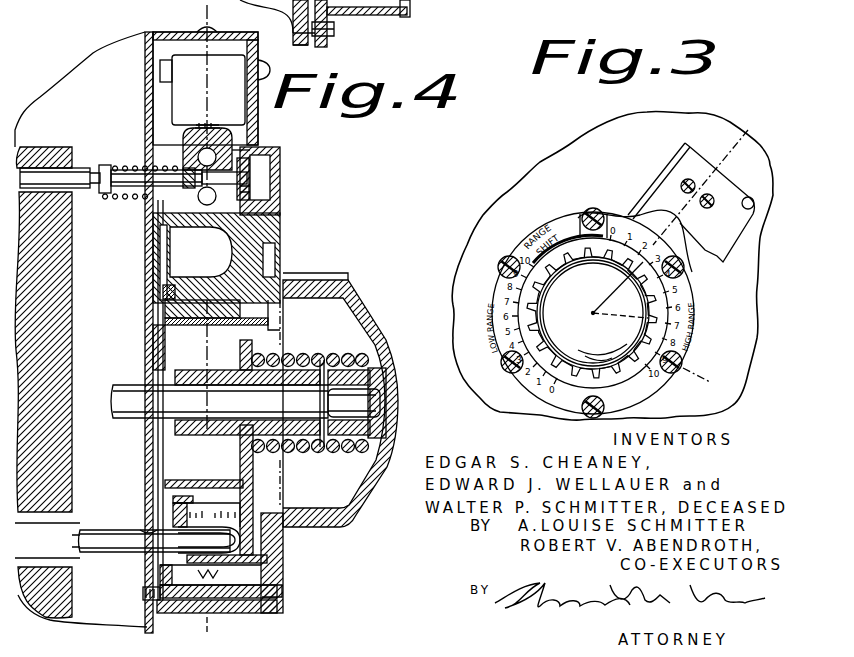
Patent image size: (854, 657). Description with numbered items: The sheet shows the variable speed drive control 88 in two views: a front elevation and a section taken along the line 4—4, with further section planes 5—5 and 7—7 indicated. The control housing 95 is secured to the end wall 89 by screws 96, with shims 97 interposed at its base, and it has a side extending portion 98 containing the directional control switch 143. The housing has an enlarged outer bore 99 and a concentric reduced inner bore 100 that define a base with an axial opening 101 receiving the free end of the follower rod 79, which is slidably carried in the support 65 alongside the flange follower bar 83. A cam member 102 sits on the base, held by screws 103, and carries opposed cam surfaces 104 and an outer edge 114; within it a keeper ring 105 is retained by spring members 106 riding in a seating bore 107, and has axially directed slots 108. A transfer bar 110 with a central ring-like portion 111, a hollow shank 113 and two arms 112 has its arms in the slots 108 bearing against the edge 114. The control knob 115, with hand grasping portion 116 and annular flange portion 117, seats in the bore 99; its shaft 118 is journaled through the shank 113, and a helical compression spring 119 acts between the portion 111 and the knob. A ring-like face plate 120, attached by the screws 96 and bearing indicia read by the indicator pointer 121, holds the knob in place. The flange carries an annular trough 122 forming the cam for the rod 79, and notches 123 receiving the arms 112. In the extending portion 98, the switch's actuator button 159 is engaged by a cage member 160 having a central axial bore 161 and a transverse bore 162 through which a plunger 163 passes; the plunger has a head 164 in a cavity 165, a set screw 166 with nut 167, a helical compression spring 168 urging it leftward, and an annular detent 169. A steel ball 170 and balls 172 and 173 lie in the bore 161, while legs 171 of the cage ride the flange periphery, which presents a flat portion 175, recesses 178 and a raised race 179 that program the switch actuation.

In FIG. 3, the section line 4— 4 is at (708, 128).
In FIG. 4, the section line 5— 5 is at (175, 17).
In FIG. 4, the section line 7— 7 is at (285, 322).
In FIG. 4, the support 65 is at (48, 147).
In FIG. 4, the follower rod 79 is at (124, 552).
In FIG. 4, the flange follower bar 83 is at (80, 168).
In FIG. 4, the control 88 is at (338, 266).
In FIG. 3, the control 88 is at (494, 381).
In FIG. 4, the end wall 89 is at (145, 95).
In FIG. 4, the control housing 95 is at (270, 615).
In FIG. 4, the screws 96 is at (283, 592).
In FIG. 3, the screws 96 is at (603, 212).
In FIG. 4, the shims 97 is at (147, 621).
In FIG. 4, the extending portion 98 is at (258, 60).
In FIG. 3, the extending portion 98 is at (670, 160).
In FIG. 4, the outer bore 99 is at (280, 228).
In FIG. 4, the inner bore 100 is at (163, 325).
In FIG. 4, the axial opening 101 is at (146, 530).
In FIG. 4, the cam member 102 is at (240, 306).
In FIG. 4, the screws 103 is at (163, 295).
In FIG. 4, the cam surfaces 104 is at (240, 494).
In FIG. 4, the keeper ring 105 is at (282, 325).
In FIG. 4, the spring members 106 is at (178, 328).
In FIG. 4, the seating bore 107 is at (205, 325).
In FIG. 4, the axially directed slots 108 is at (218, 480).
In FIG. 4, the transfer bar 110 is at (256, 461).
In FIG. 4, the central ring-like portion 111 is at (240, 356).
In FIG. 4, the arms 112 is at (272, 537).
In FIG. 4, the hollow shank 113 is at (206, 432).
In FIG. 4, the outer edge 114 is at (270, 312).
In FIG. 4, the control knob 115 is at (370, 298).
In FIG. 3, the control knob 115 is at (523, 245).
In FIG. 4, the hand grasping portion 116 is at (350, 275).
In FIG. 3, the hand grasping portion 116 is at (608, 350).
In FIG. 4, the annular flange portion 117 is at (250, 258).
In FIG. 4, the shaft 118 is at (270, 410).
In FIG. 4, the helical compression spring 119 is at (341, 353).
In FIG. 4, the face plate 120 is at (280, 208).
In FIG. 3, the face plate 120 is at (563, 407).
In FIG. 3, the indicator pointer 121 is at (584, 216).
In FIG. 4, the annular trough 122 is at (222, 546).
In FIG. 4, the notches 123 is at (267, 560).
In FIG. 4, the directional control switch 143 is at (200, 73).
In FIG. 4, the actuator button 159 is at (222, 127).
In FIG. 4, the cage member 160 is at (240, 140).
In FIG. 4, the central axial bore 161 is at (255, 154).
In FIG. 4, the transverse radially elongated bore 162 is at (192, 158).
In FIG. 4, the plunger 163 is at (128, 172).
In FIG. 4, the head 164 is at (252, 172).
In FIG. 4, the cavity 165 is at (262, 166).
In FIG. 4, the set screw 166 is at (100, 190).
In FIG. 4, the nut 167 is at (118, 198).
In FIG. 4, the helical compression spring 168 is at (120, 196).
In FIG. 4, the annular detent 169 is at (187, 218).
In FIG. 4, the steel ball 170 is at (200, 128).
In FIG. 4, the legs 171 is at (180, 250).
In FIG. 4, the ball 172 is at (253, 190).
In FIG. 4, the ball 173 is at (185, 228).
In FIG. 4, the flat portion 175 is at (201, 269).
In FIG. 4, the recesses 178 is at (282, 598).
In FIG. 4, the raised race 179 is at (212, 580).